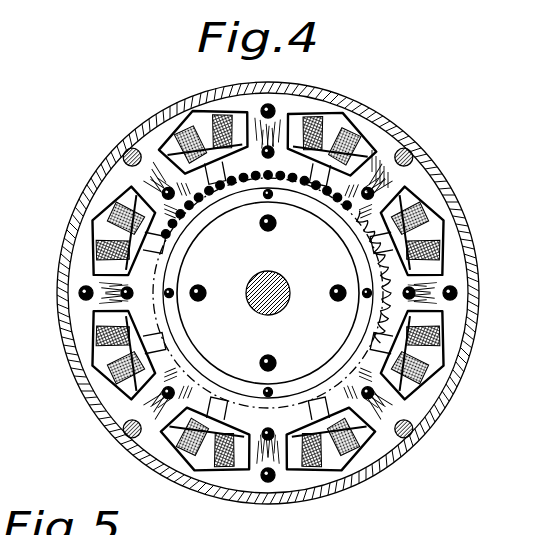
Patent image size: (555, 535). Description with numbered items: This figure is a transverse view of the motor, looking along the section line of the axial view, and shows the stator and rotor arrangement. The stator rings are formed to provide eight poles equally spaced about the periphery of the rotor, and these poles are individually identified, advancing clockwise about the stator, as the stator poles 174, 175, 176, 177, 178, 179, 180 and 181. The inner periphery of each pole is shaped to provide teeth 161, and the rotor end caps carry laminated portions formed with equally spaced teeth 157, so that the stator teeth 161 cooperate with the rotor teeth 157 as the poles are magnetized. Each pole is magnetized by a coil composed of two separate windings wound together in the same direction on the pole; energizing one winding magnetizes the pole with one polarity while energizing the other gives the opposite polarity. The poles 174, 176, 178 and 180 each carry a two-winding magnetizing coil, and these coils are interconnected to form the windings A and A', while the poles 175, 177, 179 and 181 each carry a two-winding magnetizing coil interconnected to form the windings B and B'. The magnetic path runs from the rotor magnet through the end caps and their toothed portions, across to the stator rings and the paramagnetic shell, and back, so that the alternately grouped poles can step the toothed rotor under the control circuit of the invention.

The teeth 157 is at (350, 215).
The teeth 161 is at (284, 147).
The stator pole 174 is at (262, 135).
The stator pole 175 is at (375, 175).
The stator pole 176 is at (415, 280).
The stator pole 177 is at (372, 397).
The stator pole 178 is at (267, 455).
The stator pole 179 is at (152, 402).
The stator pole 180 is at (108, 300).
The stator pole 181 is at (147, 177).